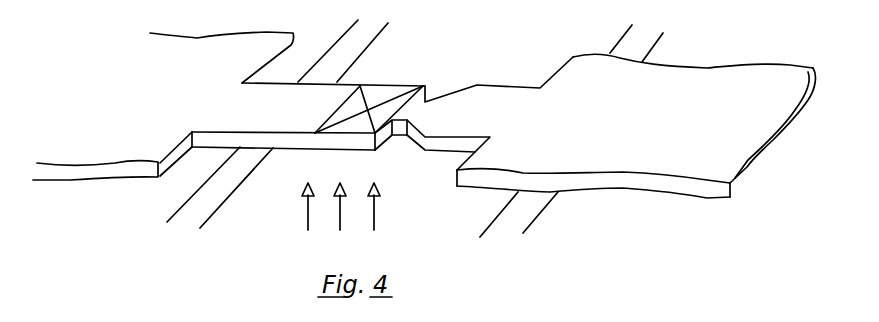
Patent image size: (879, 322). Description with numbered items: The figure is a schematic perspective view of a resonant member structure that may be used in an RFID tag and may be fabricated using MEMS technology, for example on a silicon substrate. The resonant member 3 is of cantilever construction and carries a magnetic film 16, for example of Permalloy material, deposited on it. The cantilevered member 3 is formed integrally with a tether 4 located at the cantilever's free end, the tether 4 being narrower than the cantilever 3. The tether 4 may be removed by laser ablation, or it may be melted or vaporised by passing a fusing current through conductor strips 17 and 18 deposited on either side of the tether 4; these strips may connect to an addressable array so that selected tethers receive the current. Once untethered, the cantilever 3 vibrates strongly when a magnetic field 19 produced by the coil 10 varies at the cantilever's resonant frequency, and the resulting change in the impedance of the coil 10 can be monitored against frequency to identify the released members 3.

The conductor strip 17 is at (227, 97).
The resonant member 3 is at (293, 108).
The magnetic film 16 is at (380, 91).
The tether 4 is at (412, 112).
The conductor strip 18 is at (522, 122).
The coil 10 is at (517, 243).
The magnetic field 19 is at (380, 210).